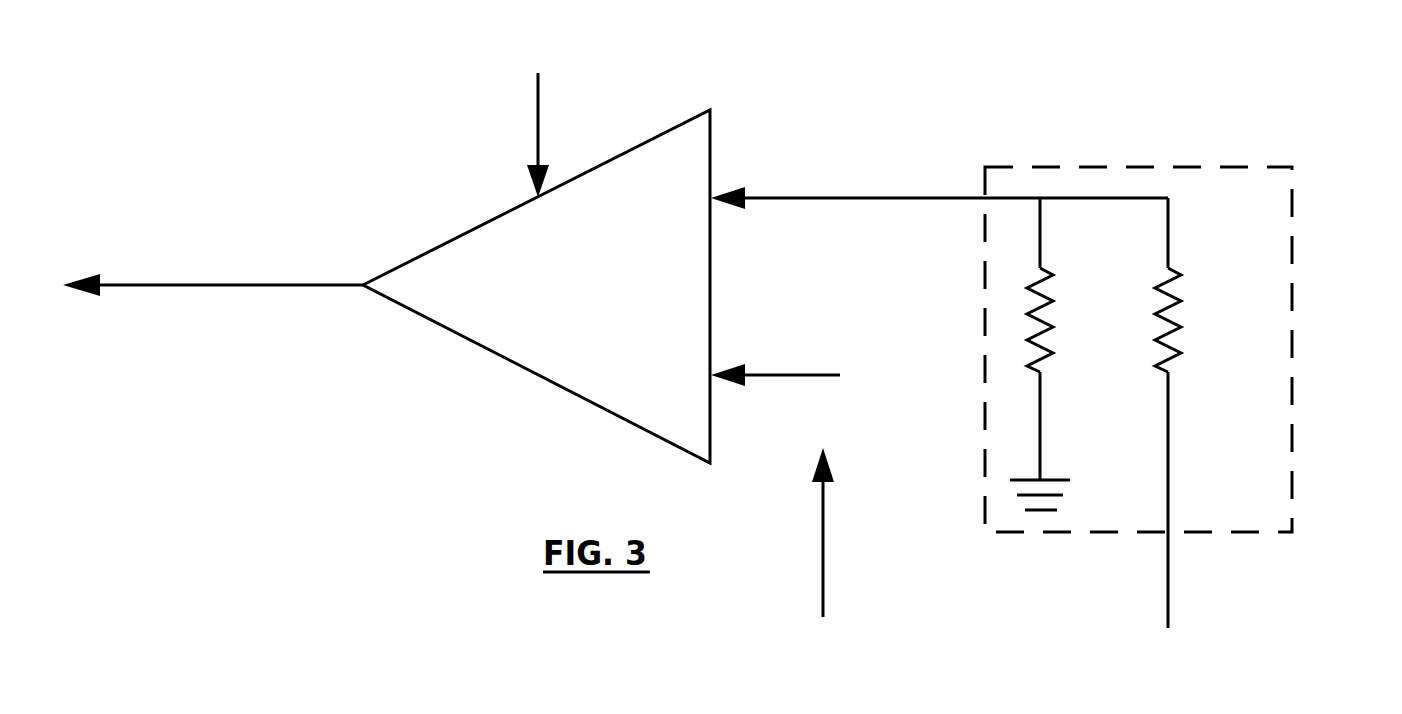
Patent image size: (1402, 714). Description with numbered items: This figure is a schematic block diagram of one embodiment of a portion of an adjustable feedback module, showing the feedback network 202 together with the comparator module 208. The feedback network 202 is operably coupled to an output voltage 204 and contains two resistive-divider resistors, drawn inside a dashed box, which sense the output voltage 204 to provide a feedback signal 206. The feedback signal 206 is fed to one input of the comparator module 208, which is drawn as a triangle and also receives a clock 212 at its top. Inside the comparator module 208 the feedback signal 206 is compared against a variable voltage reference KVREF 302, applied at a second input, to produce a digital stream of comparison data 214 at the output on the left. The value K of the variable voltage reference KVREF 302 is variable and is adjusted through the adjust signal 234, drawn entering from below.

The feedback network 202 is at (1200, 161).
The output voltage 204 is at (1274, 583).
The feedback signal 206 is at (939, 157).
The comparator module 208 is at (536, 286).
The clock 212 is at (525, 114).
The digital stream of comparison data 214 is at (251, 228).
The adjust signal 234 is at (910, 544).
The variable voltage reference KVREF 302 is at (825, 401).